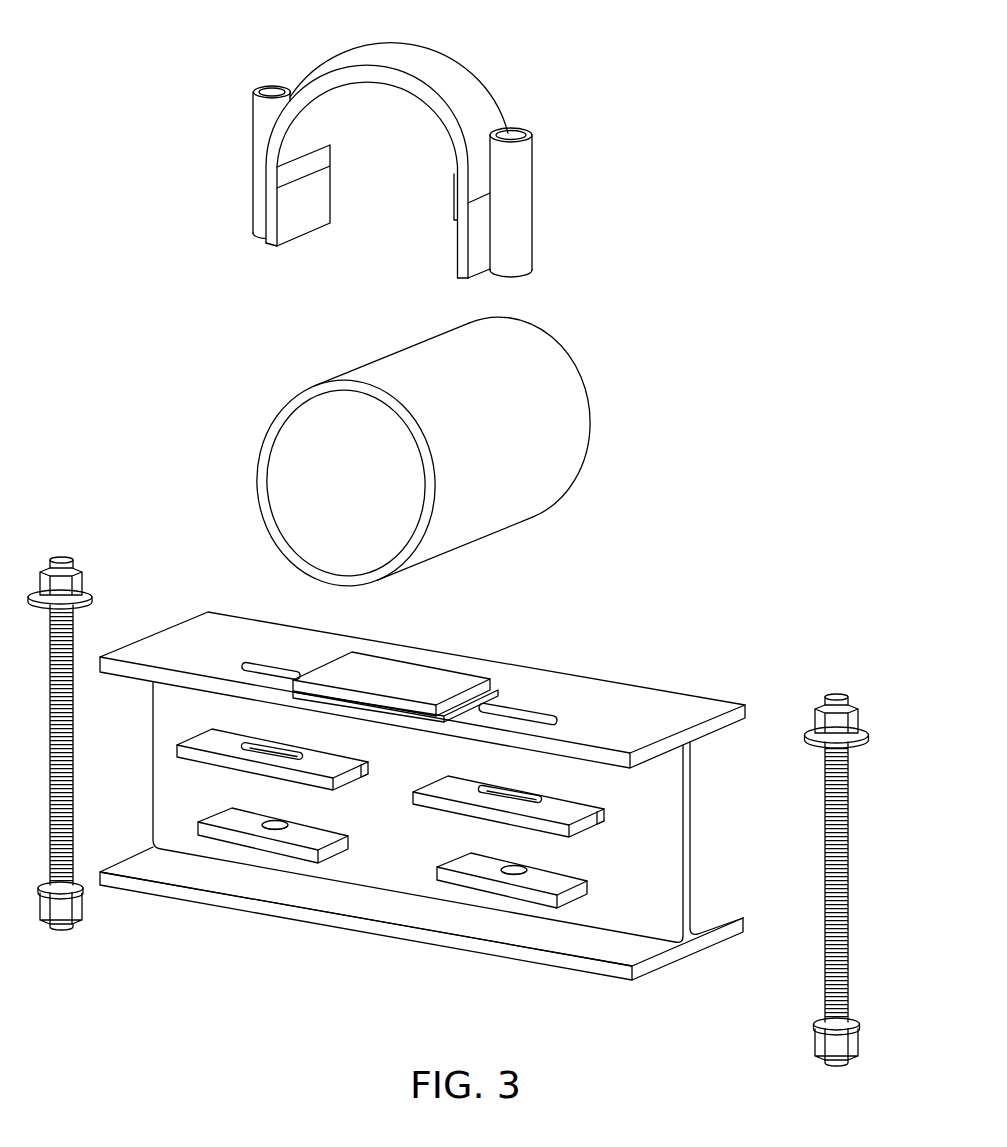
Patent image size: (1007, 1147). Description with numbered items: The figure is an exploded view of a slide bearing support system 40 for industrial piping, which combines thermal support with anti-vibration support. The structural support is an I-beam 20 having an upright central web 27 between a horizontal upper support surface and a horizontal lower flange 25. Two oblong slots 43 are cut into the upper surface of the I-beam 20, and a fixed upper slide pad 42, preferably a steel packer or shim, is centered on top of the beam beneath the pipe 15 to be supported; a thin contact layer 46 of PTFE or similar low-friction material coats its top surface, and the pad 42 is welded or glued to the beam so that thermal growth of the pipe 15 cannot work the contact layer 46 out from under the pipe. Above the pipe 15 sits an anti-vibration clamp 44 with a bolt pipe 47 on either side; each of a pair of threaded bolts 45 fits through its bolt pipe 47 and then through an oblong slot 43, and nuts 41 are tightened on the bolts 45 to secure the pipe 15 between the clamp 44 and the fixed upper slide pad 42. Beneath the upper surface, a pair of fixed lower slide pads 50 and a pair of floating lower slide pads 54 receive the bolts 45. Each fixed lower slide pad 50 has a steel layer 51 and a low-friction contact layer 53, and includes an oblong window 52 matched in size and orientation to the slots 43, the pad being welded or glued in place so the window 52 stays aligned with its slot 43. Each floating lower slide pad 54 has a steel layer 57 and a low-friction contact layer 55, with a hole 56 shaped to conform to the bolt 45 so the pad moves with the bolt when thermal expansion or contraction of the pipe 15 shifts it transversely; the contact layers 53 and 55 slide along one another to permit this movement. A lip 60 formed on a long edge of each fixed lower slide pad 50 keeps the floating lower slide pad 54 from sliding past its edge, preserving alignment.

The slide bearing support system 40 is at (136, 76).
The anti-vibration clamp 44 is at (472, 86).
The bolt pipe 47 is at (252, 114).
The pipe 15 is at (567, 372).
The threaded bolt 45 is at (78, 628).
The nut 41 is at (85, 584).
The I-beam 20 is at (430, 838).
The lower flange 25 is at (128, 868).
The central web 27 is at (668, 876).
The oblong slot 43 is at (267, 666).
The fixed upper slide pad 42 is at (419, 666).
The contact layer 46 is at (443, 675).
The fixed lower slide pad 50 is at (354, 762).
The steel layer 51 is at (452, 782).
The window 52 is at (260, 746).
The low-friction contact layer 53 is at (472, 816).
The lip 60 is at (372, 772).
The floating lower slide pad 54 is at (376, 837).
The low-friction contact layer 55 is at (574, 878).
The hole 56 is at (274, 820).
The steel layer 57 is at (584, 882).